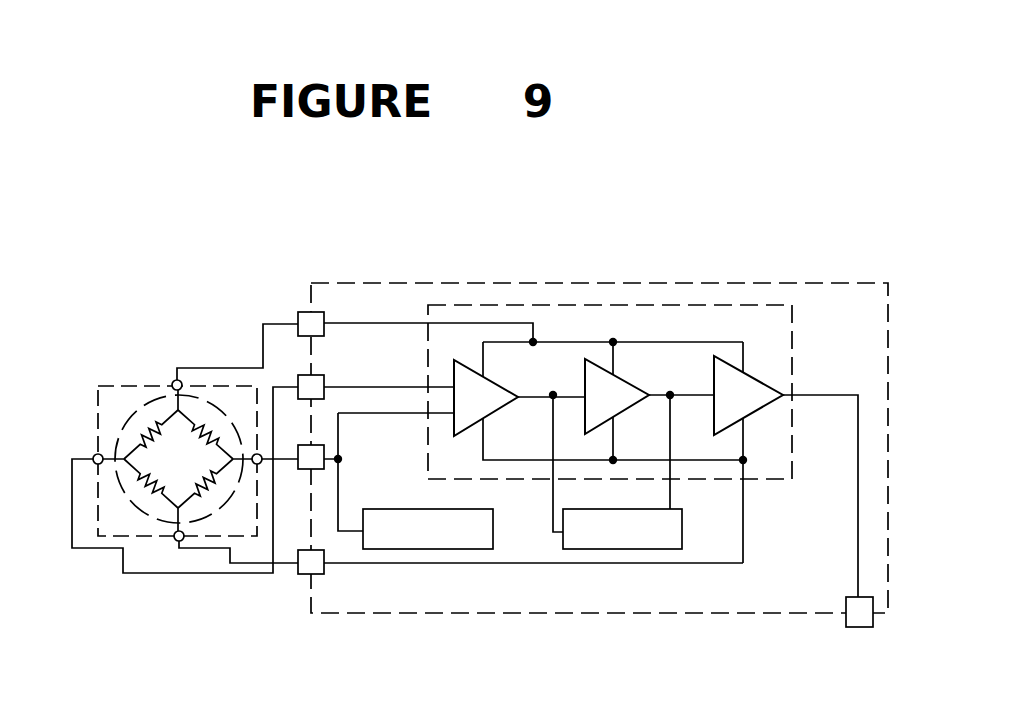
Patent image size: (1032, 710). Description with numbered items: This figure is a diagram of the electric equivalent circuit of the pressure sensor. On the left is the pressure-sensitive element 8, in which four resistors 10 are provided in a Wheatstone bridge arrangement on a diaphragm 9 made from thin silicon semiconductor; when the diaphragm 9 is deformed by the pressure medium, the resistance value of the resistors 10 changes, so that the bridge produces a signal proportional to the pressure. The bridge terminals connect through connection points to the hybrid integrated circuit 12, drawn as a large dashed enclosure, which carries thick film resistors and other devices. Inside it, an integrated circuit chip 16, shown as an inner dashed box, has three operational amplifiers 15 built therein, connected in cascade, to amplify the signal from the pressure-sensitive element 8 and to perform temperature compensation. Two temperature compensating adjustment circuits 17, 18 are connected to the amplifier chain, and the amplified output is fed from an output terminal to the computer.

The pressure-sensitive element 8 is at (97, 427).
The diaphragm 9 is at (153, 400).
The resistors 10 is at (137, 437).
The hybrid integrated circuit 12 is at (310, 602).
The operational amplifiers 15 is at (468, 363).
The integrated circuit chip 16 is at (682, 305).
The temperature compensating adjustment circuit 17 is at (423, 538).
The temperature compensating adjustment circuit 18 is at (608, 543).